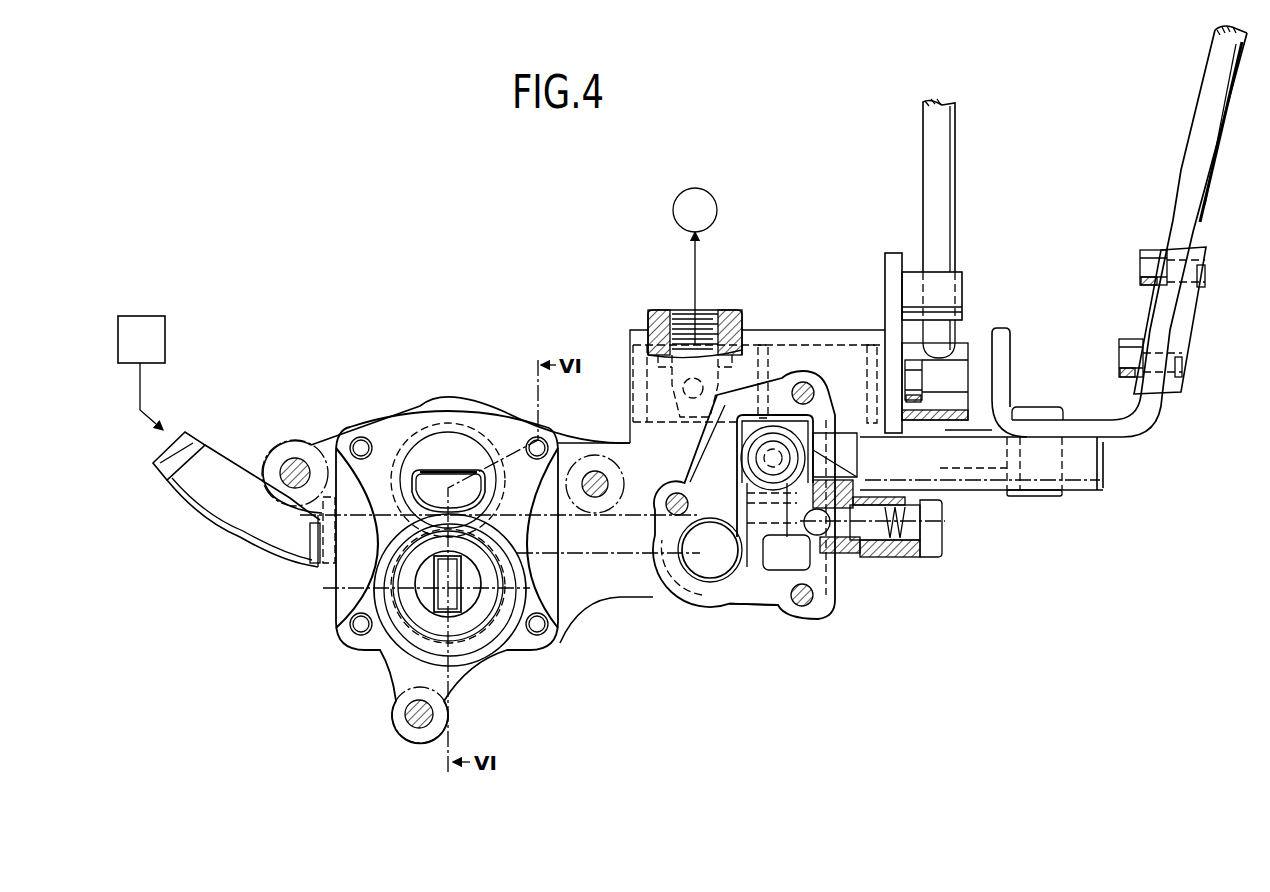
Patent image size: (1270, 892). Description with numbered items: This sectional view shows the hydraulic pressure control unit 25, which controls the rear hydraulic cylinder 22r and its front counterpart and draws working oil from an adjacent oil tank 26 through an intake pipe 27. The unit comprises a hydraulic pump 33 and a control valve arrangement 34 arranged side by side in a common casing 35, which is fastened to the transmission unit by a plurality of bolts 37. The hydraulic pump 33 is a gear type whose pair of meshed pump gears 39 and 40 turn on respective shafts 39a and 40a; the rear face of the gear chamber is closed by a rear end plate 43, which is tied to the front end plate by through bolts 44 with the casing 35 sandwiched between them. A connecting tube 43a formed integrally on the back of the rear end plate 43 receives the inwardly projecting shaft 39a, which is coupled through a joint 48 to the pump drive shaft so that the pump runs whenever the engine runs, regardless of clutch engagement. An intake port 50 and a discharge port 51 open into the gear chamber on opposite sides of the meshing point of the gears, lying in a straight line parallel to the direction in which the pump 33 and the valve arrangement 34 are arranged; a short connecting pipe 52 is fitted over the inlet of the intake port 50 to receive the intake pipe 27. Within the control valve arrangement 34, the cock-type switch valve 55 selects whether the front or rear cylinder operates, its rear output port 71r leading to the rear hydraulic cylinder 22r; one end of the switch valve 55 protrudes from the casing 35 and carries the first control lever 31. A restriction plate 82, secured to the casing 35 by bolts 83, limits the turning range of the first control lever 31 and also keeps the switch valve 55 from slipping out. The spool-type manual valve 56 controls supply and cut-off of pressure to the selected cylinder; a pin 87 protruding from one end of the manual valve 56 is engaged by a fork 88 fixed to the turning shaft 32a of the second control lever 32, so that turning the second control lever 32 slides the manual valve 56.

The rear hydraulic cylinder 22r is at (683, 221).
The hydraulic pressure control unit 25 is at (479, 340).
The oil tank 26 is at (131, 349).
The intake pipe 27 is at (140, 383).
The first control lever 31 is at (949, 150).
The second control lever 32 is at (1192, 133).
The turning shaft 32a is at (1083, 488).
The hydraulic pump 33 is at (437, 412).
The control valve arrangement 34 is at (808, 329).
The casing 35 is at (628, 597).
The bolts 37 is at (280, 473).
The pump gear 39 is at (395, 618).
The shaft of pump gear 39a is at (426, 586).
The pump gear 40 is at (457, 465).
The shaft of pump gear 40a is at (430, 462).
The rear end plate 43 is at (370, 420).
The connecting tube 43a is at (533, 538).
The through bolts 44 is at (535, 447).
The joint 48 is at (441, 604).
The intake port 50 is at (329, 574).
The discharge port 51 is at (578, 556).
The connecting pipe 52 is at (219, 470).
The switch valve 55 is at (962, 378).
The manual valve 56 is at (718, 535).
The rear output port 71r is at (718, 323).
The restriction plate 82 is at (893, 255).
The bolts 83 is at (922, 381).
The pin 87 is at (757, 596).
The fork 88 is at (786, 552).